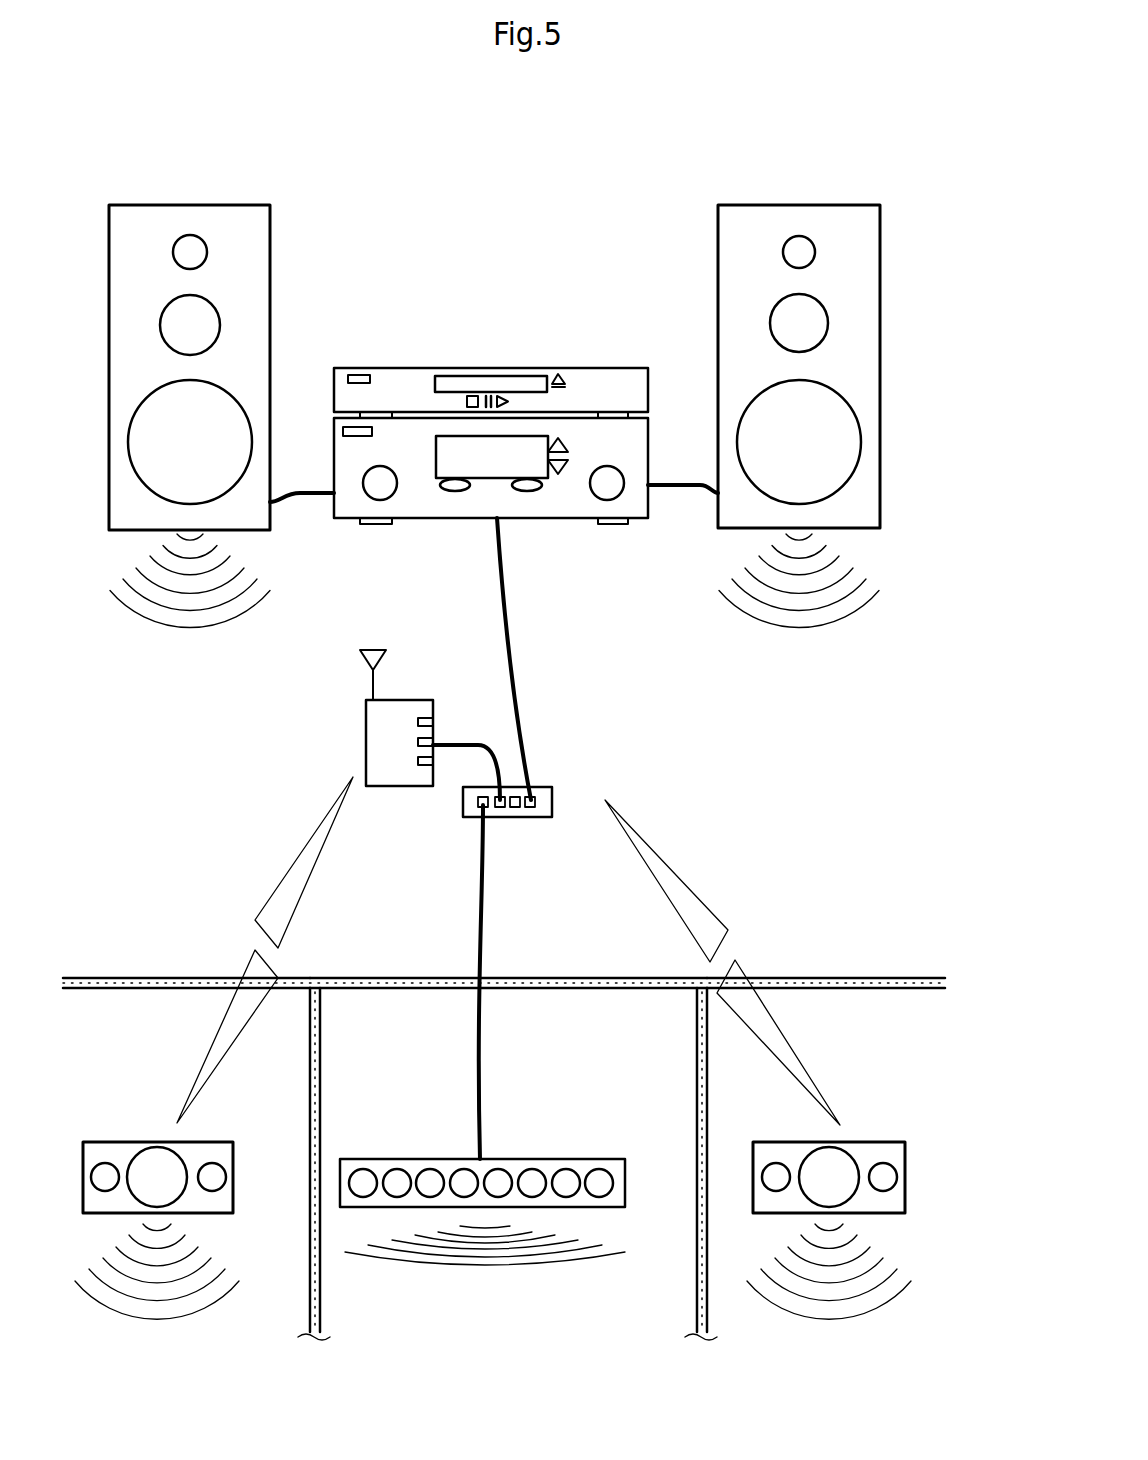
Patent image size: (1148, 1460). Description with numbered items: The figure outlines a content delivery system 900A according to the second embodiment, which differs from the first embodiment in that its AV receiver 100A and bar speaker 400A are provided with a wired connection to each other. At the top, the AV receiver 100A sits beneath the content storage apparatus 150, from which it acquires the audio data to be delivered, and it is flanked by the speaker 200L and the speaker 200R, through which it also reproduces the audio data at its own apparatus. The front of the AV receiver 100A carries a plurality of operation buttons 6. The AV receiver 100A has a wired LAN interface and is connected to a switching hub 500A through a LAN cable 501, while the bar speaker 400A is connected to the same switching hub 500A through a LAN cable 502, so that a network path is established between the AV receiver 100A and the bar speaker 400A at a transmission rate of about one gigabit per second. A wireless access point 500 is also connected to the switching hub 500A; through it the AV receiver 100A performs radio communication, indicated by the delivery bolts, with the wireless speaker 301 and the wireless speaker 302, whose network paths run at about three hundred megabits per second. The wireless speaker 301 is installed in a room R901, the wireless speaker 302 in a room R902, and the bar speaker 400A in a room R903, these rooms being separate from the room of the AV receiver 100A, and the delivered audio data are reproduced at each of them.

The content delivery system 900A is at (882, 78).
The speaker 200L is at (228, 203).
The speaker 200R is at (847, 205).
The content storage apparatus 150 is at (636, 375).
The AV receiver 100A is at (519, 484).
The operation buttons 6 is at (607, 488).
The wireless access point 500 is at (434, 700).
The LAN cable 501 is at (525, 702).
The switching hub 500A is at (553, 787).
The LAN cable 502 is at (482, 908).
The wireless speaker 301 is at (233, 1142).
The wireless speaker 302 is at (898, 1142).
The bar speaker 400A is at (623, 1159).
The room R901 is at (115, 1025).
The room R902 is at (848, 1023).
The room R903 is at (567, 1017).